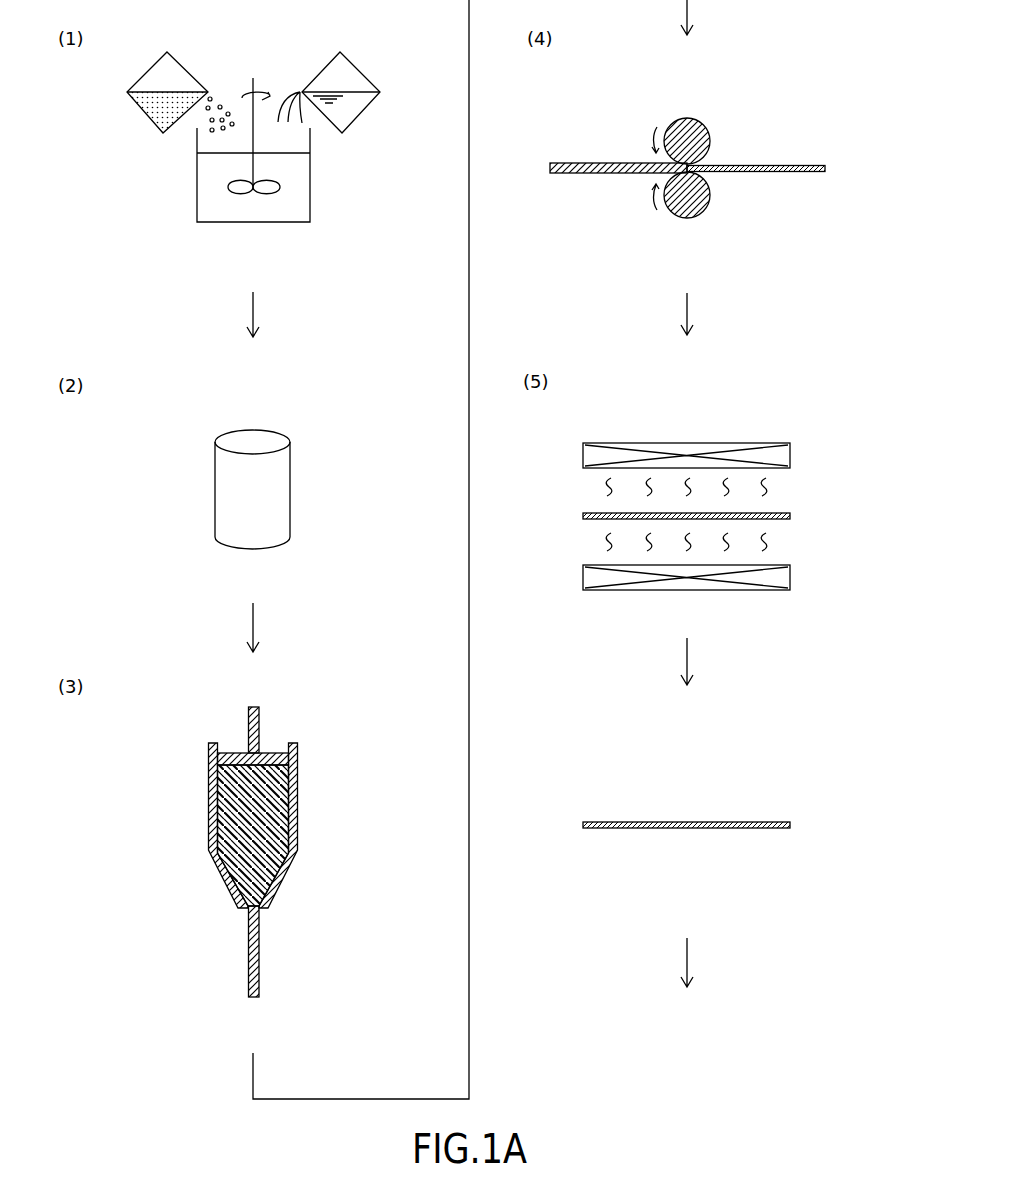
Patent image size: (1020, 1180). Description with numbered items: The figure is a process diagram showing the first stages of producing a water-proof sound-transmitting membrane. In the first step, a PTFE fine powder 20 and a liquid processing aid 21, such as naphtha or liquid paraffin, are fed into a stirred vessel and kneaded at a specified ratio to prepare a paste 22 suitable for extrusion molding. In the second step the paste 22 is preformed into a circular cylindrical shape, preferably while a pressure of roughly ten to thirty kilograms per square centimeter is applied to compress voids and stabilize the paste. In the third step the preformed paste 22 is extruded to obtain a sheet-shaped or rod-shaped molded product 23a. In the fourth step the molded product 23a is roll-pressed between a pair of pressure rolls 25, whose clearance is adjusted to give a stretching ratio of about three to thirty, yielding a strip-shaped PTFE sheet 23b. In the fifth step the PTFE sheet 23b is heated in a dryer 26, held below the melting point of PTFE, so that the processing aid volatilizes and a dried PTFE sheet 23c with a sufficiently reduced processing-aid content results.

The PTFE fine powder 20 is at (137, 106).
The processing aid 21 is at (360, 101).
The paste 22 is at (297, 183).
The molded product 23a is at (260, 957).
The PTFE sheet 23b is at (802, 174).
The PTFE sheet 23c is at (790, 825).
The pressure rolls 25 is at (692, 120).
The dryer 26 is at (615, 452).